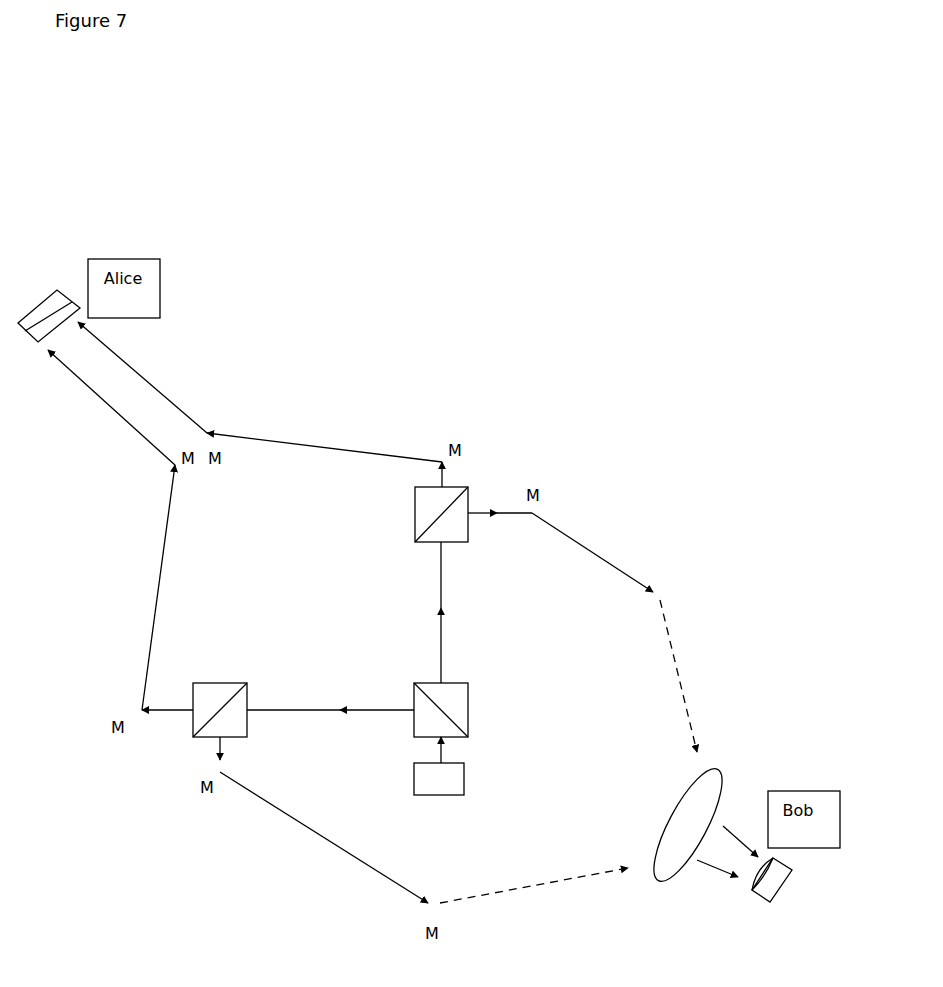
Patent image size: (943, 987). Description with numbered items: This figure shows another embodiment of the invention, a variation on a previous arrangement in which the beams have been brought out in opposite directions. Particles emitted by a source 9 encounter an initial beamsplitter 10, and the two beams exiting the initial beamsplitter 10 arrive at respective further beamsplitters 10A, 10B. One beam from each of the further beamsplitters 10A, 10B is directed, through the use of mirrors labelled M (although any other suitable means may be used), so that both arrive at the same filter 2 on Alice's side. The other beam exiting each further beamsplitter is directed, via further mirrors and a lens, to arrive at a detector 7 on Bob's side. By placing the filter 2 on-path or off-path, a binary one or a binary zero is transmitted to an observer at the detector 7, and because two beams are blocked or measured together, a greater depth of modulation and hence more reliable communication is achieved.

The filter 2 is at (47, 312).
The detector 7 is at (781, 892).
The source 9 is at (439, 796).
The initial beamsplitter 10 is at (470, 710).
The further beamsplitter 10A is at (220, 687).
The further beamsplitter 10B is at (417, 514).